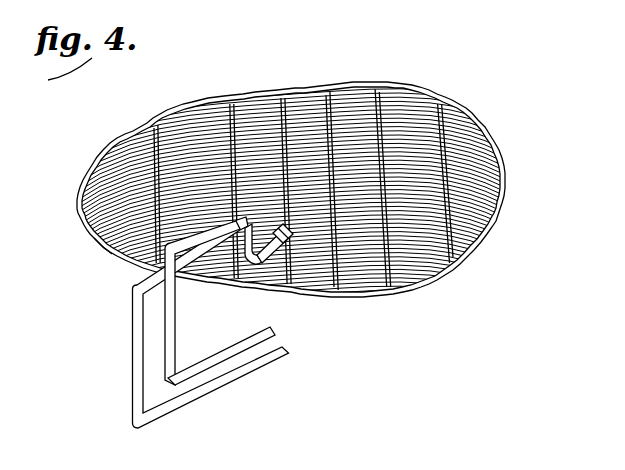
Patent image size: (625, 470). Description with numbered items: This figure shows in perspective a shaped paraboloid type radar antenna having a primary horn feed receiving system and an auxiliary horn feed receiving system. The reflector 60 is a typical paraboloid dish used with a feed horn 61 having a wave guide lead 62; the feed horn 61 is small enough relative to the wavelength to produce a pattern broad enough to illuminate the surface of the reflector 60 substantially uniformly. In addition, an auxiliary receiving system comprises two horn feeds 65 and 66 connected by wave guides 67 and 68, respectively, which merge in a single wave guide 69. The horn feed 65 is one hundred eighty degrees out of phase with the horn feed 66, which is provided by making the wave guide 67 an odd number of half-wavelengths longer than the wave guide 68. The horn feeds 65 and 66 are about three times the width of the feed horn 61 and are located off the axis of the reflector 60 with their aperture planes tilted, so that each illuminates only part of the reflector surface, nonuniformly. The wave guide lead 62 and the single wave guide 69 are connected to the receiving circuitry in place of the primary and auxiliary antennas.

The reflector 60 is at (418, 89).
The feed horn 61 is at (256, 250).
The wave guide lead 62 is at (132, 363).
The horn feed 65 is at (291, 240).
The horn feed 66 is at (112, 253).
The wave guide 67 is at (227, 294).
The wave guide 68 is at (172, 296).
The single wave guide 69 is at (205, 357).